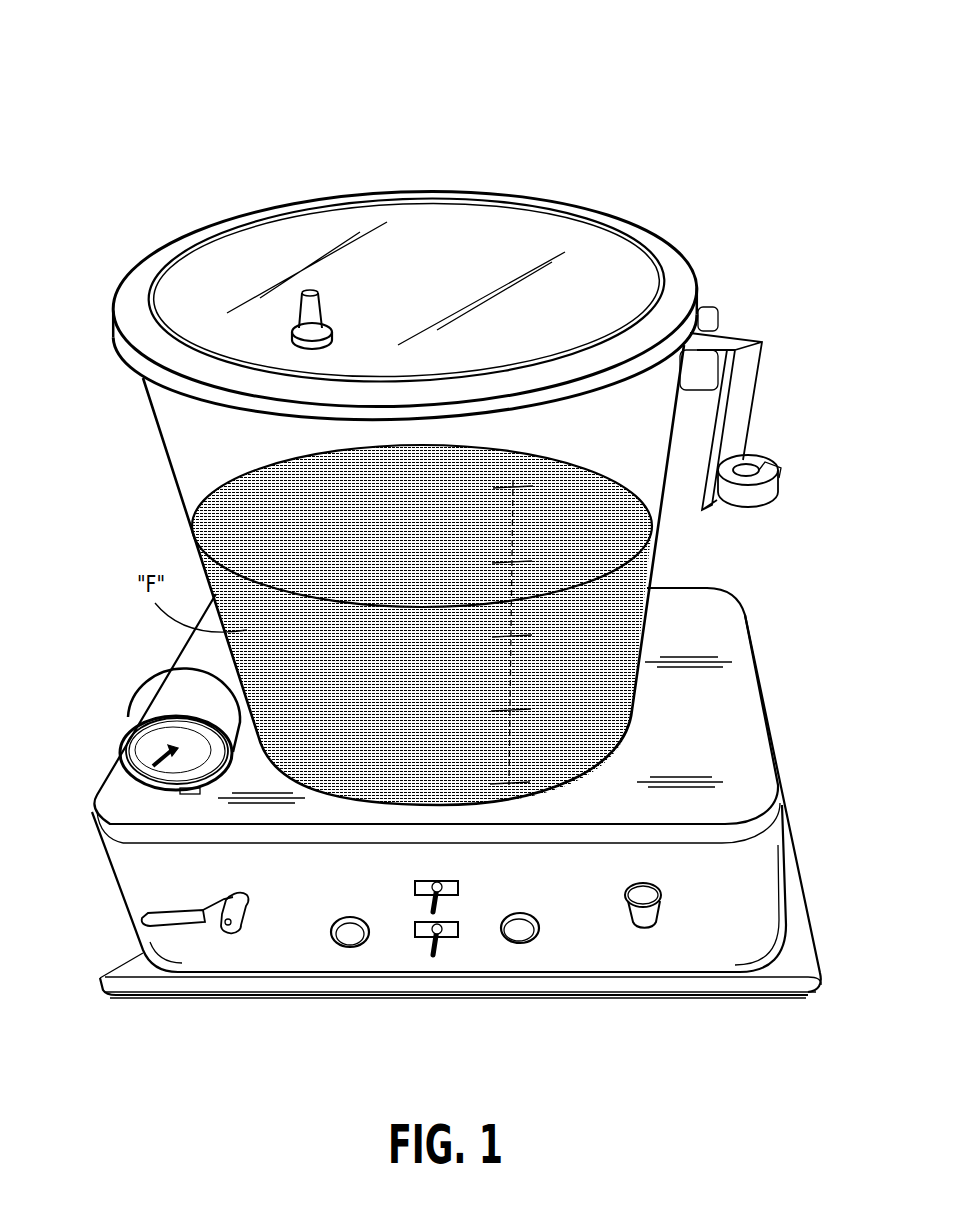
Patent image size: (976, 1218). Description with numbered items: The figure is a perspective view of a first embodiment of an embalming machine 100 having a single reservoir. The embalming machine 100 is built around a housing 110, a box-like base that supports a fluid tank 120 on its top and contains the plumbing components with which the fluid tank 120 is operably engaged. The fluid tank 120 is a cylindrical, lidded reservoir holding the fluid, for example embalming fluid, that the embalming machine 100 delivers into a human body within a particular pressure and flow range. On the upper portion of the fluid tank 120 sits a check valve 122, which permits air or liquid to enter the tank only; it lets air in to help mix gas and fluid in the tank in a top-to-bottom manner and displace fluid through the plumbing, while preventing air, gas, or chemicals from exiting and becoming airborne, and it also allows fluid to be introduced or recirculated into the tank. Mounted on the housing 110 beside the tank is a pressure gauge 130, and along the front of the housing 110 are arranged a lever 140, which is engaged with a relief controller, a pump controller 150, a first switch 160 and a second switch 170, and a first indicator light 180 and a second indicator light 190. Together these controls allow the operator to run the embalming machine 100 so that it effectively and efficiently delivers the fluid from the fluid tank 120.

The embalming machine 100 is at (145, 76).
The housing 110 is at (737, 713).
The fluid tank 120 is at (628, 567).
The check valve 122 is at (310, 308).
The pressure gauge 130 is at (155, 738).
The lever 140 is at (170, 915).
The pump controller 150 is at (643, 922).
The first switch 160 is at (433, 932).
The second switch 170 is at (435, 890).
The first indicator light 180 is at (347, 937).
The second indicator light 190 is at (518, 942).